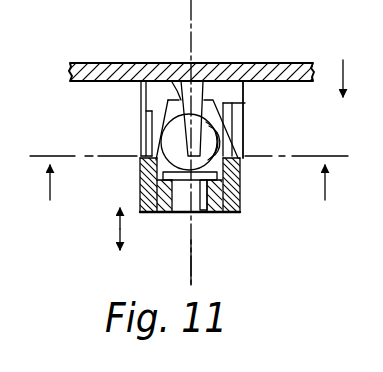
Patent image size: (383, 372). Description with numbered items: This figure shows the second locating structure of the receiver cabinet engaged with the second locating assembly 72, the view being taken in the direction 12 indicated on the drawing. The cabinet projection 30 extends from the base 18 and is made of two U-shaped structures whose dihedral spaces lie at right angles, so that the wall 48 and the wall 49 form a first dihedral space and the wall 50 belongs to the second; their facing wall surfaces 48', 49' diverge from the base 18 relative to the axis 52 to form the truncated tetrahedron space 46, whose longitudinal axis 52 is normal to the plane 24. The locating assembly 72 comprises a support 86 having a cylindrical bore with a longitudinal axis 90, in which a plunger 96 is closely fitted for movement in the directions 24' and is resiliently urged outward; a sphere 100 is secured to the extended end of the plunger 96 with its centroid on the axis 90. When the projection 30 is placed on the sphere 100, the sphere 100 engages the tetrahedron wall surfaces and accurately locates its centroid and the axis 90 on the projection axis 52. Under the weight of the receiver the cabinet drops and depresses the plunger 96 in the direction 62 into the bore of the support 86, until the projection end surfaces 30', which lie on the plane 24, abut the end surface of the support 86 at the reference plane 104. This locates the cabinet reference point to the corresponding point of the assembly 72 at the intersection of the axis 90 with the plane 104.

The direction of movement 12 is at (185, 201).
The base 18 is at (305, 63).
The plane 24 is at (296, 137).
The directions 24' is at (101, 229).
The projection 30 is at (136, 144).
The projection end surface 30' is at (189, 193).
The truncated tetrahedron space 46 is at (211, 63).
The wall 48 is at (243, 120).
The facing wall surface 48' is at (250, 122).
The wall 49 is at (128, 118).
The facing wall surface 49' is at (165, 62).
The wall 50 is at (173, 212).
The axis 52 is at (194, 12).
The direction 62 is at (341, 95).
The locating assembly 72 is at (241, 222).
The support 86 is at (244, 178).
The longitudinal axis 90 is at (190, 268).
The plunger 96 is at (211, 212).
The sphere 100 is at (165, 136).
The reference plane 104 is at (48, 154).